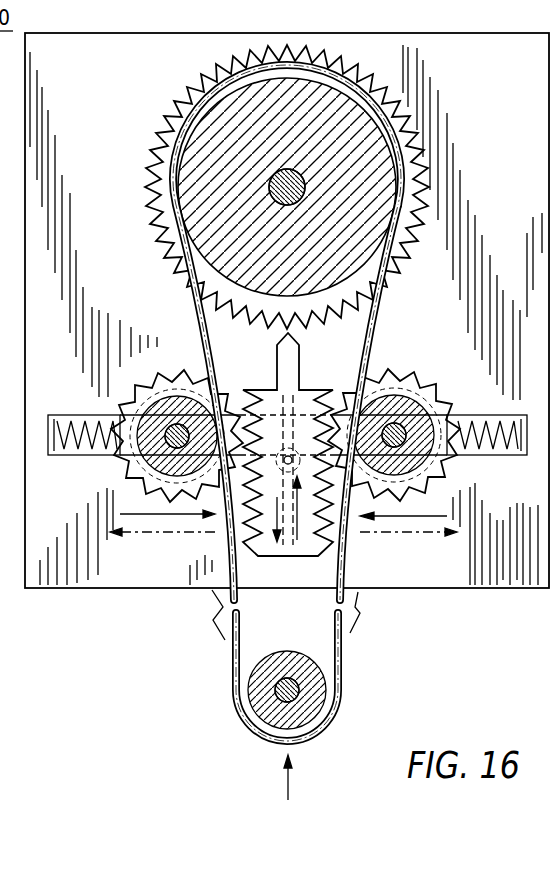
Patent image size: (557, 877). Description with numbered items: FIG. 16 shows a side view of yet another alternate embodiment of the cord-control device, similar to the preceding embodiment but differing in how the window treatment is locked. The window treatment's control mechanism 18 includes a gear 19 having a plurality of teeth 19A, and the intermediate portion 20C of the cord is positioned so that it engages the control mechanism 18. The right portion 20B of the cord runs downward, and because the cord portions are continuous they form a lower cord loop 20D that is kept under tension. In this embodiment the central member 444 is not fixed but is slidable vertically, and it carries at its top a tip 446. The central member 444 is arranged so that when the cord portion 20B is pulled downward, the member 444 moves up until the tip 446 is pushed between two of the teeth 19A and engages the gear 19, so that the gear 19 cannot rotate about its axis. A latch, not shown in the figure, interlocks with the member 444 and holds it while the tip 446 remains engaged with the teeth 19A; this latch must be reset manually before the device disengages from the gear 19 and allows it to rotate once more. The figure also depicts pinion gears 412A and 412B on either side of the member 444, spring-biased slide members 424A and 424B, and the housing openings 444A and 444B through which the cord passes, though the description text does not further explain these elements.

The gear 19 is at (295, 167).
The teeth 19A is at (380, 93).
The control mechanism 18 is at (200, 168).
The intermediate portion 20C is at (284, 323).
The right portion 20B is at (385, 309).
The lower cord loop 20D is at (348, 652).
The tip 446 is at (291, 342).
The left pinion gear 412A is at (194, 368).
The right pinion gear 412B is at (422, 393).
The left spring-biased slide 424A is at (135, 481).
The right spring-biased slide 424B is at (440, 482).
The central member 444 is at (202, 590).
The housing left opening 444A is at (200, 597).
The housing right opening 444B is at (399, 614).